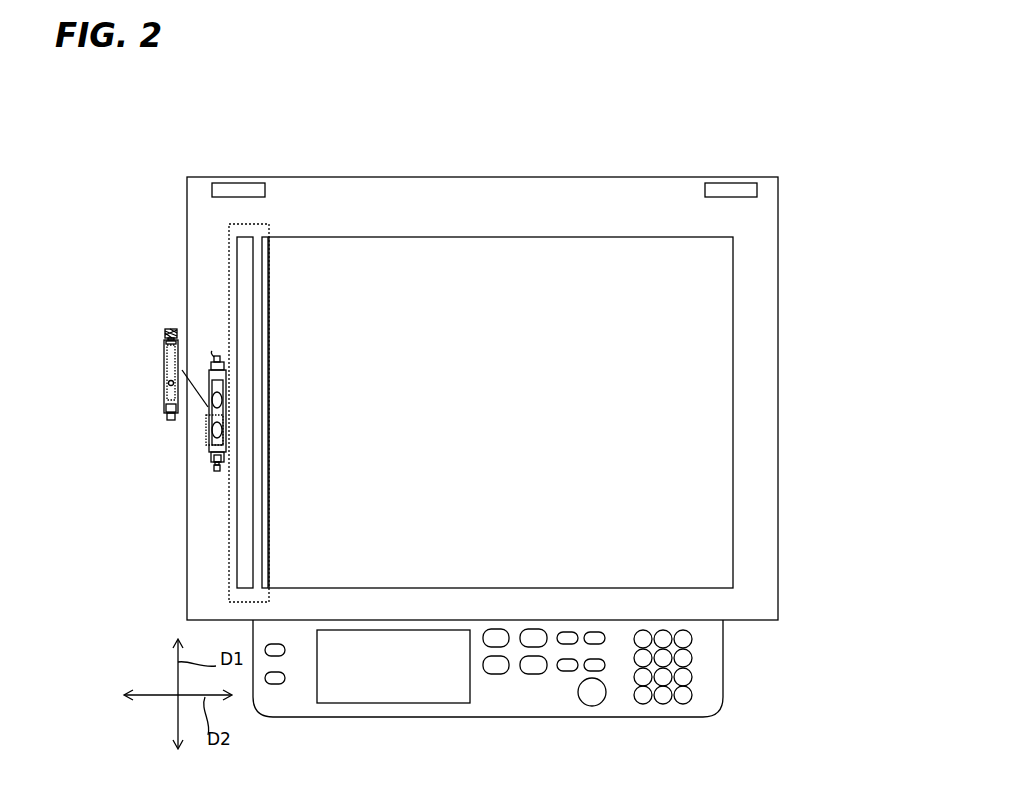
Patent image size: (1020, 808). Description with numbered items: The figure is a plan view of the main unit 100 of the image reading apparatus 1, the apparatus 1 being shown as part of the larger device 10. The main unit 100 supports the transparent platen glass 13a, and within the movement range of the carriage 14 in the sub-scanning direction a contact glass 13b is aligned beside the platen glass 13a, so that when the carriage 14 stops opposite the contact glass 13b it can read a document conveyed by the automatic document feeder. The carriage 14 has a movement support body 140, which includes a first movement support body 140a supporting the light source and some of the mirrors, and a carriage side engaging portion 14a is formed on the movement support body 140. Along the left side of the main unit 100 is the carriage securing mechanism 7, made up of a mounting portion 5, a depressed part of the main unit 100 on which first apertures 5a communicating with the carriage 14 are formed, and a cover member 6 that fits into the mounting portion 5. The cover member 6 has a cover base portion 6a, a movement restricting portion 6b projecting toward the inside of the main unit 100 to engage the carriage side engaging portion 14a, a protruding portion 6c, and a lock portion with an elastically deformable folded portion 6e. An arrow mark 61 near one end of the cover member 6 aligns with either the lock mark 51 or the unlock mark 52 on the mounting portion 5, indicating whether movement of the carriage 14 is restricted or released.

The image forming apparatus 10 is at (762, 116).
The image reading apparatus 1 is at (757, 162).
The carriage securing mechanism 7 is at (178, 263).
The cover member 6 is at (174, 328).
The folded portion 6e is at (168, 332).
The protruding portion 6c is at (164, 338).
The cover base portion 6a is at (164, 356).
The movement restricting portion 6b is at (168, 381).
The arrow mark 61 is at (165, 410).
The mounting portion 5 is at (217, 355).
The first apertures 5a is at (219, 427).
The unlock mark 52 is at (221, 361).
The lock mark 51 is at (216, 470).
The carriage side engaging portion 14a is at (206, 440).
The carriage 14 is at (272, 500).
The first movement support body 140a is at (265, 412).
The movement support body 140 is at (270, 452).
The platen glass 13a is at (733, 500).
The contact glass 13b is at (237, 557).
The main unit 100 is at (187, 522).